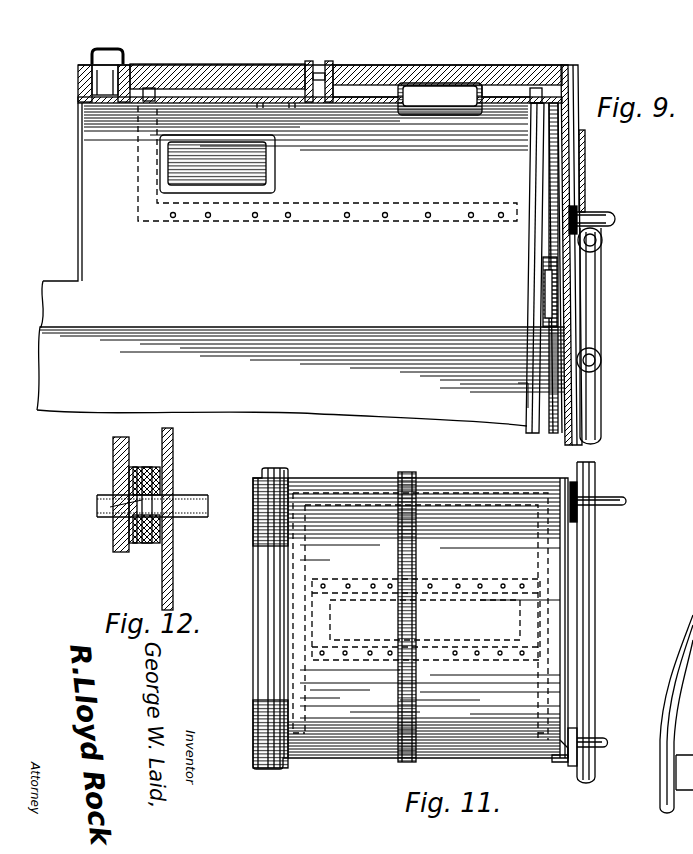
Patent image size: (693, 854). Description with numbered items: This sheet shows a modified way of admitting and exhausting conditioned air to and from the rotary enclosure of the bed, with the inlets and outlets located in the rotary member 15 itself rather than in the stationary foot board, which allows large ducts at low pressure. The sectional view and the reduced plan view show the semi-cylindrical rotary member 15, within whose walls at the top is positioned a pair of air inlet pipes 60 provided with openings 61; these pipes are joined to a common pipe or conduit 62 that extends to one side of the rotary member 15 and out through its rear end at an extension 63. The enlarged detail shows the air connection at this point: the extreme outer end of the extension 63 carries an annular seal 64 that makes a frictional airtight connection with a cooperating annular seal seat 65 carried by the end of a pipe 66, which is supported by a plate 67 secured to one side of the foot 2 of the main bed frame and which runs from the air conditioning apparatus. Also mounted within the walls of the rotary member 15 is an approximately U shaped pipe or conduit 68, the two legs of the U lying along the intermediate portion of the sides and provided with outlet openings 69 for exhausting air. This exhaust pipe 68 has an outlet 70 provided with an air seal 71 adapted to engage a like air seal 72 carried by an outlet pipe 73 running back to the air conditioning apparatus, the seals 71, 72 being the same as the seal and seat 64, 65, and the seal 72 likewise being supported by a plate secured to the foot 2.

In FIG. 9, the foot 2 is at (597, 311).
In FIG. 11, the foot 2 is at (586, 598).
In FIG. 9, the rotary member 15 is at (95, 201).
In FIG. 11, the rotary member 15 is at (303, 686).
In FIG. 9, the air inlet pipes 60 is at (372, 98).
In FIG. 11, the air inlet pipes 60 is at (480, 590).
In FIG. 9, the openings 61 is at (291, 101).
In FIG. 11, the openings 61 is at (348, 593).
In FIG. 9, the common pipe or conduit 62 is at (537, 94).
In FIG. 11, the common pipe or conduit 62 is at (546, 557).
In FIG. 9, the extension 63 is at (567, 222).
In FIG. 12, the extension 63 is at (115, 499).
In FIG. 11, the extension 63 is at (572, 492).
In FIG. 12, the annular seal 64 is at (110, 517).
In FIG. 12, the annular seal seat 65 is at (151, 543).
In FIG. 9, the pipe 66 is at (608, 215).
In FIG. 12, the pipe 66 is at (192, 504).
In FIG. 11, the pipe 66 is at (610, 506).
In FIG. 9, the plate 67 is at (586, 181).
In FIG. 12, the plate 67 is at (175, 557).
In FIG. 9, the U shaped pipe or conduit 68 is at (240, 216).
In FIG. 11, the U shaped pipe or conduit 68 is at (348, 496).
In FIG. 9, the outlet openings 69 is at (346, 219).
In FIG. 11, the outlet 70 is at (552, 758).
In FIG. 11, the air seal 71 is at (566, 760).
In FIG. 11, the air seal 72 is at (574, 736).
In FIG. 11, the outlet pipe 73 is at (598, 750).